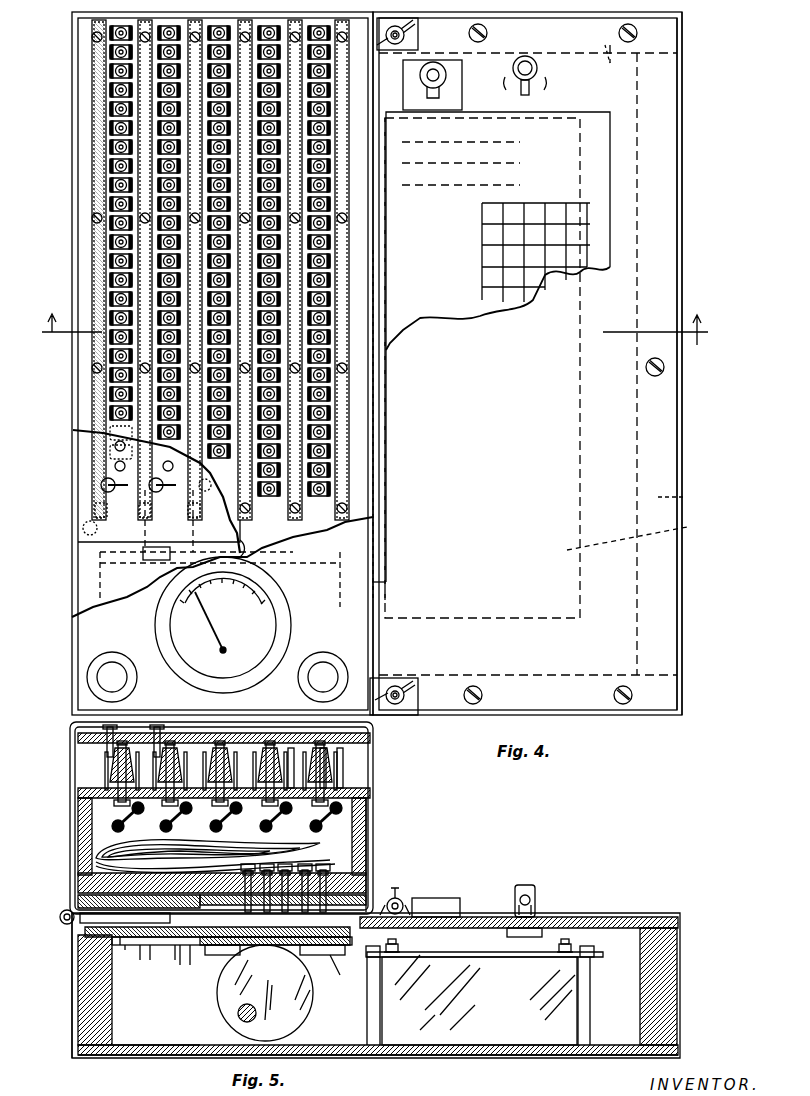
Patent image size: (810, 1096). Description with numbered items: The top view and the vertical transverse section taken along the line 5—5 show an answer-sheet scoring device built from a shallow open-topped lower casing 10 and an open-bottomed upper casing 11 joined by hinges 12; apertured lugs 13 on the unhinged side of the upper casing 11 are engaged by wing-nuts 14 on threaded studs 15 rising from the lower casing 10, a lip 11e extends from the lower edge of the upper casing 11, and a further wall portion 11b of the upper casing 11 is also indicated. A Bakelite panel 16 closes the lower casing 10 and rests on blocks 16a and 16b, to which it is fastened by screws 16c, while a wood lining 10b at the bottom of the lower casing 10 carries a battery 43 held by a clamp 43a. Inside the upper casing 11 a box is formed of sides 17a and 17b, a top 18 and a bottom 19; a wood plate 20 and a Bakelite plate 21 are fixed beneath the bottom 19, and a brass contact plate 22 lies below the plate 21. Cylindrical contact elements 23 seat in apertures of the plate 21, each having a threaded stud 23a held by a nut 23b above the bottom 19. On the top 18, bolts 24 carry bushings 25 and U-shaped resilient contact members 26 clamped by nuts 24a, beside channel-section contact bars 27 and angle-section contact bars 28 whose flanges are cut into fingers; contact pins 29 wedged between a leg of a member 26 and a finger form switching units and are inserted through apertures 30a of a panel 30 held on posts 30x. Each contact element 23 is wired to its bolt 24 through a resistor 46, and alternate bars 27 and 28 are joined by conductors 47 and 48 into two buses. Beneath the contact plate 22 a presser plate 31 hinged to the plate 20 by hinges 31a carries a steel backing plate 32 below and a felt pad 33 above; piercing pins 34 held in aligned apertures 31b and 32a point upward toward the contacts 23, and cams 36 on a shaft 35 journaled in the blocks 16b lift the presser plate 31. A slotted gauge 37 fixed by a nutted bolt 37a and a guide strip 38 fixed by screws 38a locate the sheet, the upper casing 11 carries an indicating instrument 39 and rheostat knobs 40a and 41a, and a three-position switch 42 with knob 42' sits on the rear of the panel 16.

In FIG. 4, the section line 5 is at (694, 134).
In FIG. 5, the section line 5 is at (585, 917).
In FIG. 4, the lower casing 10 is at (677, 582).
In FIG. 5, the lower casing 10 is at (680, 975).
In FIG. 5, the lining 10b is at (480, 1052).
In FIG. 4, the upper casing 11 is at (90, 495).
In FIG. 5, the upper casing 11 is at (95, 850).
In FIG. 5, the panel top plate 11b is at (78, 733).
In FIG. 4, the lip 11e is at (380, 548).
In FIG. 5, the hinges 12 is at (72, 935).
In FIG. 4, the lugs 13 is at (418, 30).
In FIG. 4, the wing-nuts 14 is at (380, 42).
In FIG. 5, the wing-nuts 14 is at (405, 910).
In FIG. 4, the screw threaded studs 15 is at (395, 44).
In FIG. 5, the screw threaded studs 15 is at (398, 898).
In FIG. 4, the panel 16 is at (620, 457).
In FIG. 5, the panel 16 is at (640, 917).
In FIG. 4, the block 16a is at (687, 497).
In FIG. 5, the block 16a is at (105, 985).
In FIG. 4, the block 16b is at (630, 733).
In FIG. 4, the screws 16c is at (488, 34).
In FIG. 5, the side of box 17a is at (80, 877).
In FIG. 5, the side of box 17b is at (360, 822).
In FIG. 5, the top of box 18 is at (82, 812).
In FIG. 5, the bottom of box 19 is at (80, 897).
In FIG. 5, the plate 20 is at (60, 920).
In FIG. 5, the plate 21 is at (366, 865).
In FIG. 5, the contact plate 22 is at (368, 895).
In FIG. 5, the contact element 23 is at (323, 868).
In FIG. 5, the stud 23a is at (352, 845).
In FIG. 5, the nuts 23b is at (215, 855).
In FIG. 4, the bolt 24 is at (121, 246).
In FIG. 5, the bolt 24 is at (225, 822).
In FIG. 4, the nut 24a is at (319, 428).
In FIG. 5, the bushing 25 is at (340, 775).
In FIG. 4, the U-shaped contact member 26 is at (99, 175).
In FIG. 5, the U-shaped contact member 26 is at (80, 790).
In FIG. 4, the contact bars 27 is at (145, 118).
In FIG. 5, the contact bars 27 is at (90, 830).
In FIG. 4, the contact bar 28 is at (97, 92).
In FIG. 5, the contact bar 28 is at (120, 775).
In FIG. 4, the contact pins 29 is at (108, 478).
In FIG. 5, the contact pins 29 is at (152, 748).
In FIG. 4, the panel 30 is at (84, 524).
In FIG. 5, the panel 30 is at (105, 740).
In FIG. 4, the apertures 30a is at (108, 453).
In FIG. 5, the apertures 30a is at (330, 738).
In FIG. 5, the posts 30x is at (300, 758).
In FIG. 5, the presser plate 31 is at (165, 985).
In FIG. 5, the hinges 31a is at (128, 943).
In FIG. 5, the apertures 31b is at (215, 975).
In FIG. 5, the backing plate 32 is at (210, 950).
In FIG. 5, the apertures 32a is at (300, 960).
In FIG. 5, the pad 33 is at (192, 965).
In FIG. 5, the marking or piercing pins 34 is at (345, 980).
In FIG. 5, the shaft 35 is at (238, 1017).
In FIG. 5, the cams 36 is at (300, 1022).
In FIG. 4, the adjustable guide or gauge 37 is at (452, 88).
In FIG. 5, the adjustable guide or gauge 37 is at (460, 902).
In FIG. 4, the nutted bolt 37a is at (433, 62).
In FIG. 5, the adjustable guide strip 38 is at (165, 980).
In FIG. 5, the screws 38a is at (160, 1005).
In FIG. 4, the electrical indicating instrument 39 is at (268, 616).
In FIG. 4, the operating knob 40a is at (118, 660).
In FIG. 4, the operating knob 41a is at (325, 660).
In FIG. 5, the switch 42 is at (485, 942).
In FIG. 4, the operating knob 42' is at (542, 75).
In FIG. 5, the operating knob 42' is at (534, 887).
In FIG. 4, the battery 43 is at (638, 534).
In FIG. 5, the battery 43 is at (412, 1045).
In FIG. 5, the clamp 43a is at (590, 970).
In FIG. 5, the resistor 46 is at (170, 822).
In FIG. 4, the conductor 47 is at (240, 557).
In FIG. 4, the conductor 48 is at (158, 560).